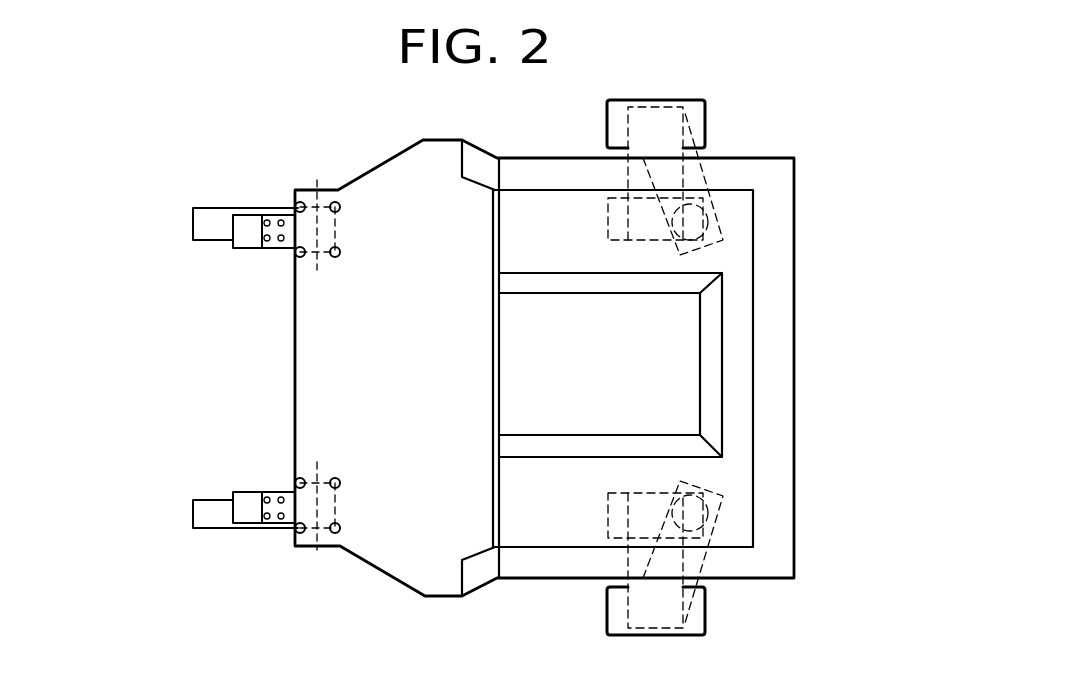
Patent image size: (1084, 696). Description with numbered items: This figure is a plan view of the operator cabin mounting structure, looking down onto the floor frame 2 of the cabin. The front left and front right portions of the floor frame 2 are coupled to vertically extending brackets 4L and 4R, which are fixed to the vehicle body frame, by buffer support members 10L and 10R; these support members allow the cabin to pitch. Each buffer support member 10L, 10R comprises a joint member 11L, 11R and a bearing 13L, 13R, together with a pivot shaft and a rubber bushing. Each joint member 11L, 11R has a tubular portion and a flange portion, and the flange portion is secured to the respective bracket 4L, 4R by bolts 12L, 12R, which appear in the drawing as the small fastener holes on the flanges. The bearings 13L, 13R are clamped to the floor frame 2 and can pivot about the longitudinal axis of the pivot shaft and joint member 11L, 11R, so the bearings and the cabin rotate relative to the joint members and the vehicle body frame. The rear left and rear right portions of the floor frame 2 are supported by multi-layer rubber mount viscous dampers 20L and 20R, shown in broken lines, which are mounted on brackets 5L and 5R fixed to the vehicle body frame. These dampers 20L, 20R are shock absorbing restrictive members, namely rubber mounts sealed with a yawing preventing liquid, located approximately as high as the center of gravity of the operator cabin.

The floor frame 2 is at (378, 555).
The bracket 4R is at (220, 218).
The bracket 4L is at (218, 524).
The bracket 5R is at (670, 123).
The bracket 5L is at (673, 615).
The buffer support member 10R is at (194, 252).
The buffer support member 10L is at (194, 516).
The joint member 11R is at (288, 250).
The joint member 11L is at (293, 494).
The bolts 12R is at (265, 250).
The bolts 12L is at (247, 507).
The bearing 13R is at (322, 258).
The bearing 13L is at (323, 478).
The multi-layer rubber mount viscous damper 20R is at (710, 227).
The multi-layer rubber mount viscous damper 20L is at (710, 518).